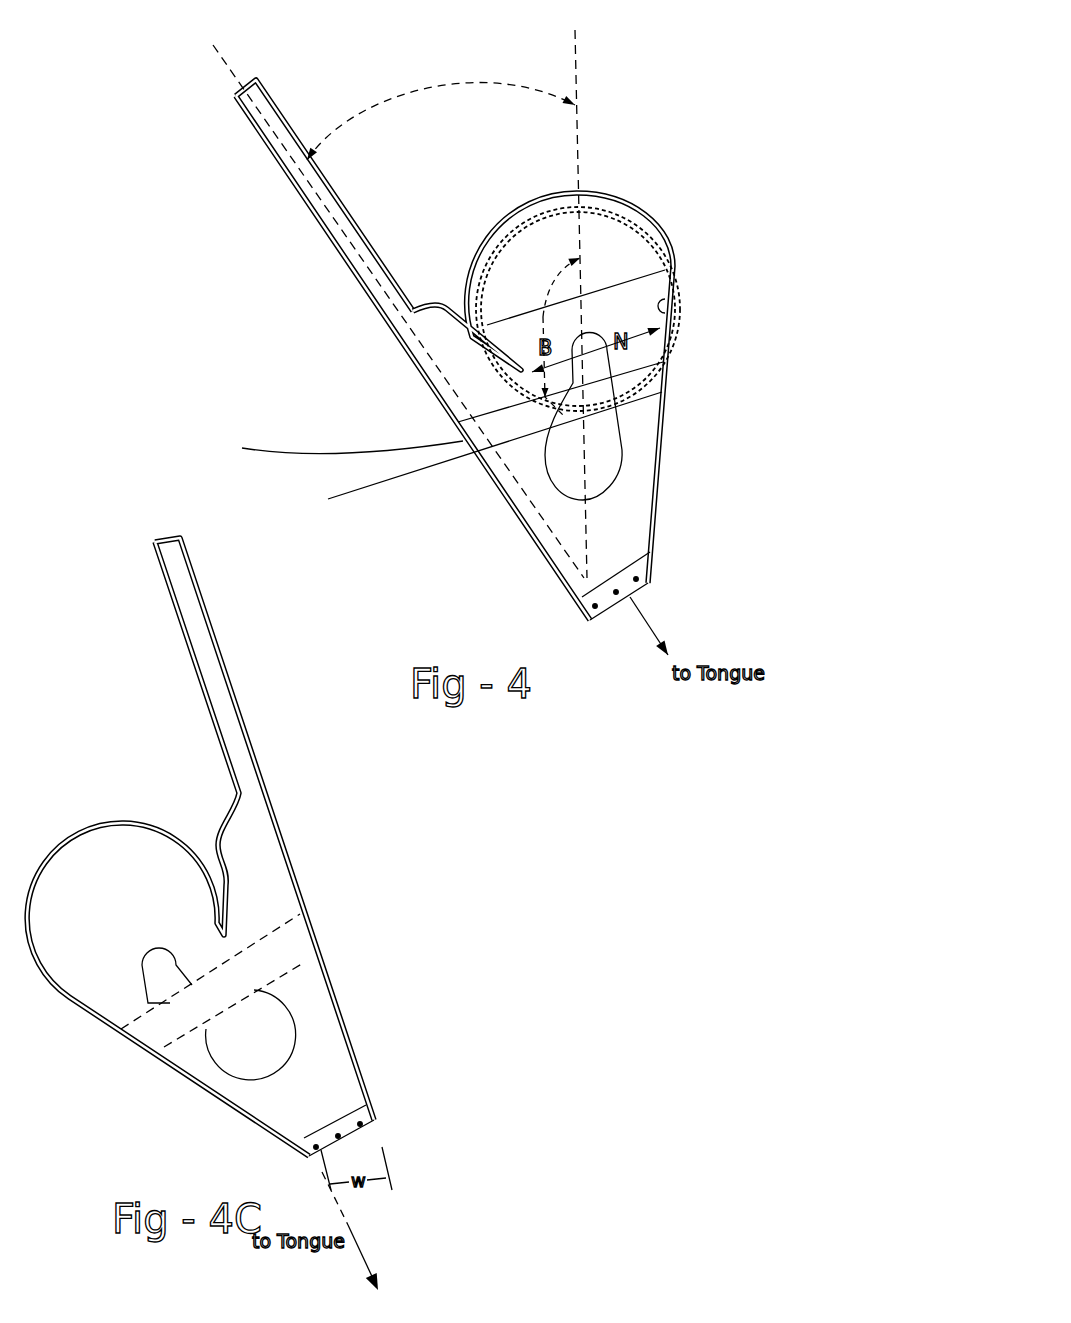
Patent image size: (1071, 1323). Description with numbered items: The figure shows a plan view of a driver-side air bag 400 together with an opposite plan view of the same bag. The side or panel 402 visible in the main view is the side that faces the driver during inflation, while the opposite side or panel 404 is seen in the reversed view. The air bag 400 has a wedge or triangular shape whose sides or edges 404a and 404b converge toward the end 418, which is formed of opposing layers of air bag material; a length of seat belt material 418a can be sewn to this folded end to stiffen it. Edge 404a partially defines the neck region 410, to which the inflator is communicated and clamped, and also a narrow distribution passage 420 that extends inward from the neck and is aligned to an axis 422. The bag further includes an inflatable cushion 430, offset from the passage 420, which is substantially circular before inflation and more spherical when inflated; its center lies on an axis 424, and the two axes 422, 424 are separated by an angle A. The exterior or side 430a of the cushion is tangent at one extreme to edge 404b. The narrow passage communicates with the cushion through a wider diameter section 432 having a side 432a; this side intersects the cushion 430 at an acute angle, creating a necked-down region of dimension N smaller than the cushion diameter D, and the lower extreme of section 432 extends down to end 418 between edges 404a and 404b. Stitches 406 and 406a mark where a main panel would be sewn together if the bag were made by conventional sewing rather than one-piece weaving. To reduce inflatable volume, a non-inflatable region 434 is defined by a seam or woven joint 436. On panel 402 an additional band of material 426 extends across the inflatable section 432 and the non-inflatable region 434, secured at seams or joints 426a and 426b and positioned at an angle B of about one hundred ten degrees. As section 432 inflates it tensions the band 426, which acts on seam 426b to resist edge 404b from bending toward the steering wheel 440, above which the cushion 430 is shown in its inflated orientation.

In FIG. 4, the air bag 400 is at (636, 458).
In FIG. 4, the side or panel 402 is at (633, 508).
In FIG. 4, the opposite side or panel 404 is at (663, 447).
In FIG. 4C, the opposite side or panel 404 is at (264, 1099).
In FIG. 4, the side or edge 404a is at (307, 205).
In FIG. 4, the side or edge 404b is at (663, 393).
In FIG. 4, the stitches 406 is at (665, 296).
In FIG. 4, the stitches 406a is at (568, 553).
In FIG. 4, the neck region 410 is at (270, 98).
In FIG. 4, the end 418 is at (600, 600).
In FIG. 4, the seat belt material 418a is at (642, 577).
In FIG. 4, the distribution passage 420 is at (322, 173).
In FIG. 4, the axis 422 is at (335, 227).
In FIG. 4, the axis 424 is at (583, 72).
In FIG. 4, the band of material 426 is at (474, 453).
In FIG. 4, the seam or joint 426a is at (348, 441).
In FIG. 4, the seam or joint 426b is at (663, 361).
In FIG. 4, the inflatable cushion 430 is at (619, 243).
In FIG. 4C, the inflatable cushion 430 is at (97, 953).
In FIG. 4, the exterior or side of the cushion 430a is at (504, 213).
In FIG. 4, the wider diameter section 432 is at (487, 398).
In FIG. 4, the side 432a is at (473, 317).
In FIG. 4, the non-inflatable region 434 is at (590, 445).
In FIG. 4C, the non-inflatable region 434 is at (209, 1068).
In FIG. 4, the seam or woven joint 436 is at (548, 485).
In FIG. 4, the steering wheel 440 is at (685, 292).